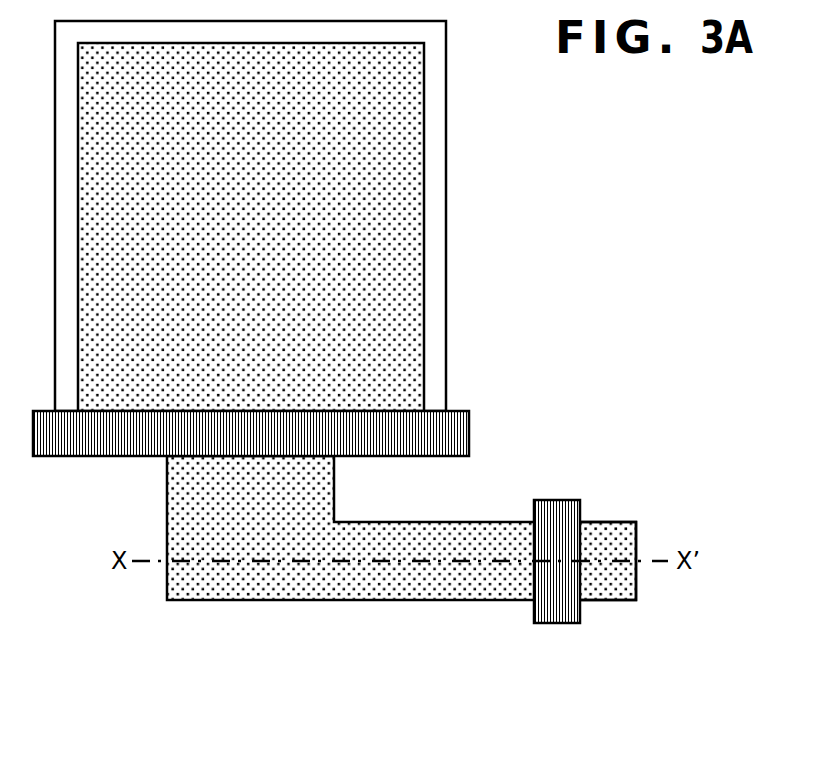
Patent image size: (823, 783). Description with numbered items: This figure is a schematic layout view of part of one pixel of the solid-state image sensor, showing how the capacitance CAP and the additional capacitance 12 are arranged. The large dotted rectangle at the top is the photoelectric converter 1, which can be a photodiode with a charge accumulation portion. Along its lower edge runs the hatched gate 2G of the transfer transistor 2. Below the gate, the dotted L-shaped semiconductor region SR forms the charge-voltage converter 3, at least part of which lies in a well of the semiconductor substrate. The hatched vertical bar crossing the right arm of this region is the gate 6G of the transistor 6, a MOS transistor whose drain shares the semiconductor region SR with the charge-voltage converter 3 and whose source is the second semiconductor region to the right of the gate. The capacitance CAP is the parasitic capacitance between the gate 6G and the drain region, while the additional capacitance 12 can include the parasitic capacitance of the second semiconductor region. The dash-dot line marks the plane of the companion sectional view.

The photoelectric converter 1 is at (424, 153).
The transfer transistor 2 is at (347, 427).
The gate of transfer transistor 2G is at (469, 433).
The charge-voltage converter 3 is at (390, 732).
The transistor 6 is at (561, 640).
The gate 6G is at (561, 597).
The additional capacitance 12 is at (670, 727).